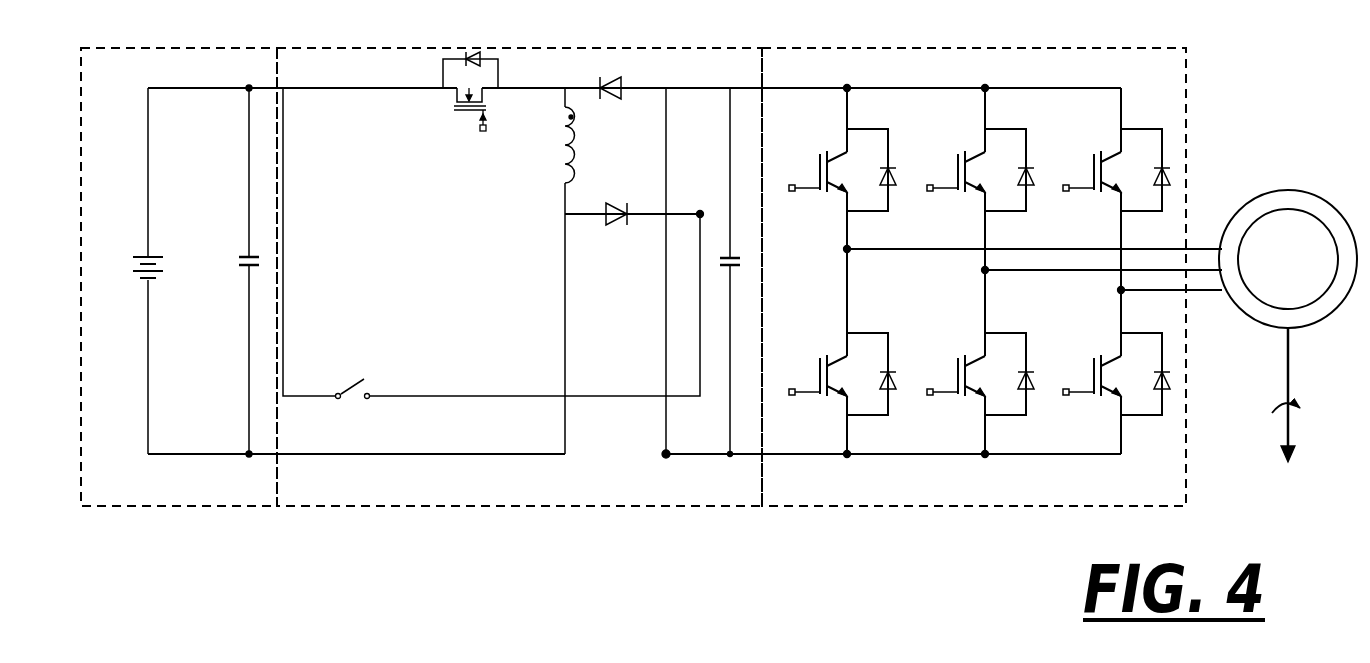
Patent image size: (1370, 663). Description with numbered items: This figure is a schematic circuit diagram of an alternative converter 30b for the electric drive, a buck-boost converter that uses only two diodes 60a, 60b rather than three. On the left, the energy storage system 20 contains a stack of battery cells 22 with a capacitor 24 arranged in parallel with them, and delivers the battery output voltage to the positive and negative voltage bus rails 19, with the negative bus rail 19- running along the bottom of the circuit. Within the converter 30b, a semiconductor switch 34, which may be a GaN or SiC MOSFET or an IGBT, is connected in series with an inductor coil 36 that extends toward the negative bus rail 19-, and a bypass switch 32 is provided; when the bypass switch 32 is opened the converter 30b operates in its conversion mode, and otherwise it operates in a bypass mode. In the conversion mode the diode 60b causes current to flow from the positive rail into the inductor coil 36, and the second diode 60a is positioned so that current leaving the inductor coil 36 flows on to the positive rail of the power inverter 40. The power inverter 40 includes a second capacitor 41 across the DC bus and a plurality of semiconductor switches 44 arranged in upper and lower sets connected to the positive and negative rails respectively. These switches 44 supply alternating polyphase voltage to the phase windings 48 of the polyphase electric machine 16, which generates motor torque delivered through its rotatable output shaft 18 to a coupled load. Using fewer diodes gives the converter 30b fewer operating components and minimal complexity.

The polyphase electric machine 16 is at (1288, 259).
The rotatable output shaft 18 is at (1290, 380).
The voltage bus rails 19 is at (634, 256).
The negative voltage bus rail 19- is at (328, 454).
The energy storage system 20 is at (118, 48).
The battery cells 22 is at (141, 293).
The capacitor 24 is at (242, 276).
The converter 30b is at (612, 48).
The bypass switch 32 is at (368, 355).
The semiconductor switch 34 is at (445, 104).
The inductor coil 36 is at (561, 168).
The power inverter 40 is at (1058, 48).
The second capacitor 41 is at (733, 244).
The semiconductor switches 44 is at (1065, 137).
The phase windings 48 is at (1123, 249).
The second diode 60a is at (622, 102).
The diode 60b is at (615, 228).